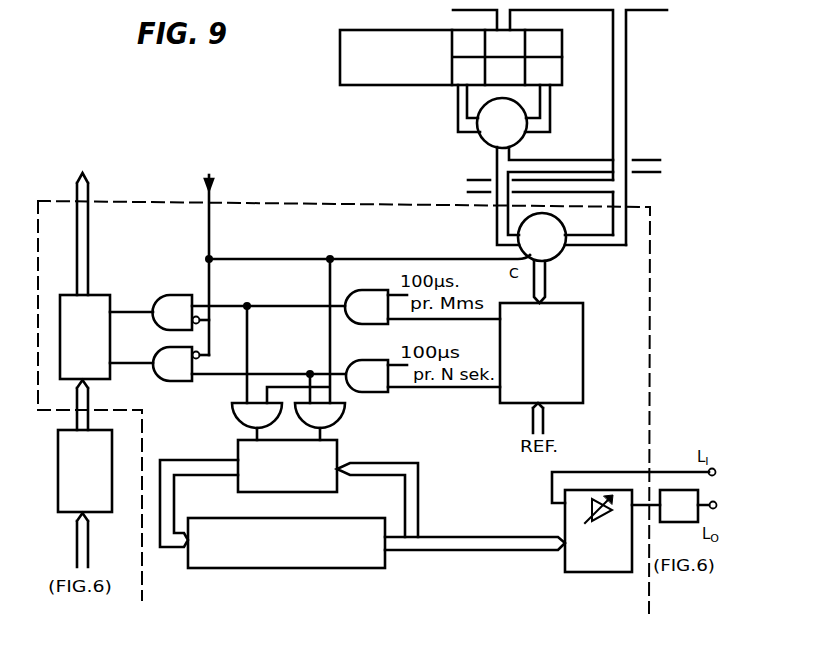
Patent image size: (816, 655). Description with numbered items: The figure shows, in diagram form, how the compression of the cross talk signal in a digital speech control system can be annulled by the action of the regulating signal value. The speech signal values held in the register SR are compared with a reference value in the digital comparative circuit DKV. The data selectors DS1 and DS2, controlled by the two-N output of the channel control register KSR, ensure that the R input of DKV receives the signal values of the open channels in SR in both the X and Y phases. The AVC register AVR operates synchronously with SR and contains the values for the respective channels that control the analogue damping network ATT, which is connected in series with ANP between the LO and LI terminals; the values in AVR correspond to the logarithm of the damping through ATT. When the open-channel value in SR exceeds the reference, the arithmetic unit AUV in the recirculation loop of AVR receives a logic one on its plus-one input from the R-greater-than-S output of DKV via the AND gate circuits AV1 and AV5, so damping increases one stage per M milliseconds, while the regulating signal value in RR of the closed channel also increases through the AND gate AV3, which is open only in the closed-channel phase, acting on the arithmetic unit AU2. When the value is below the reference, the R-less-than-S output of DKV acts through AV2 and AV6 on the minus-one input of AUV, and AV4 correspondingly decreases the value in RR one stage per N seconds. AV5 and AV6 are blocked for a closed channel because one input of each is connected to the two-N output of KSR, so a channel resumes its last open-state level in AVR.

The speech signal register SR is at (463, 78).
The data selector DS1 is at (502, 123).
The data selector DS2 is at (542, 237).
The digital comparative circuit DKV is at (541, 353).
The AND gate circuit AV1 is at (366, 307).
The AND gate circuit AV2 is at (367, 376).
The AND gate circuit AV3 is at (173, 312).
The AND gate circuit AV4 is at (172, 364).
The AND gate circuit AV5 is at (257, 415).
The AND gate circuit AV6 is at (320, 415).
The channel control register KSR is at (223, 254).
The arithmetic unit AUV is at (287, 466).
The AVC register AVR is at (222, 431).
The analogue damping network ATT is at (598, 531).
The ANP unit ANP is at (679, 506).
The regulating signal register RR is at (83, 223).
The arithmetic unit AU2 is at (85, 471).